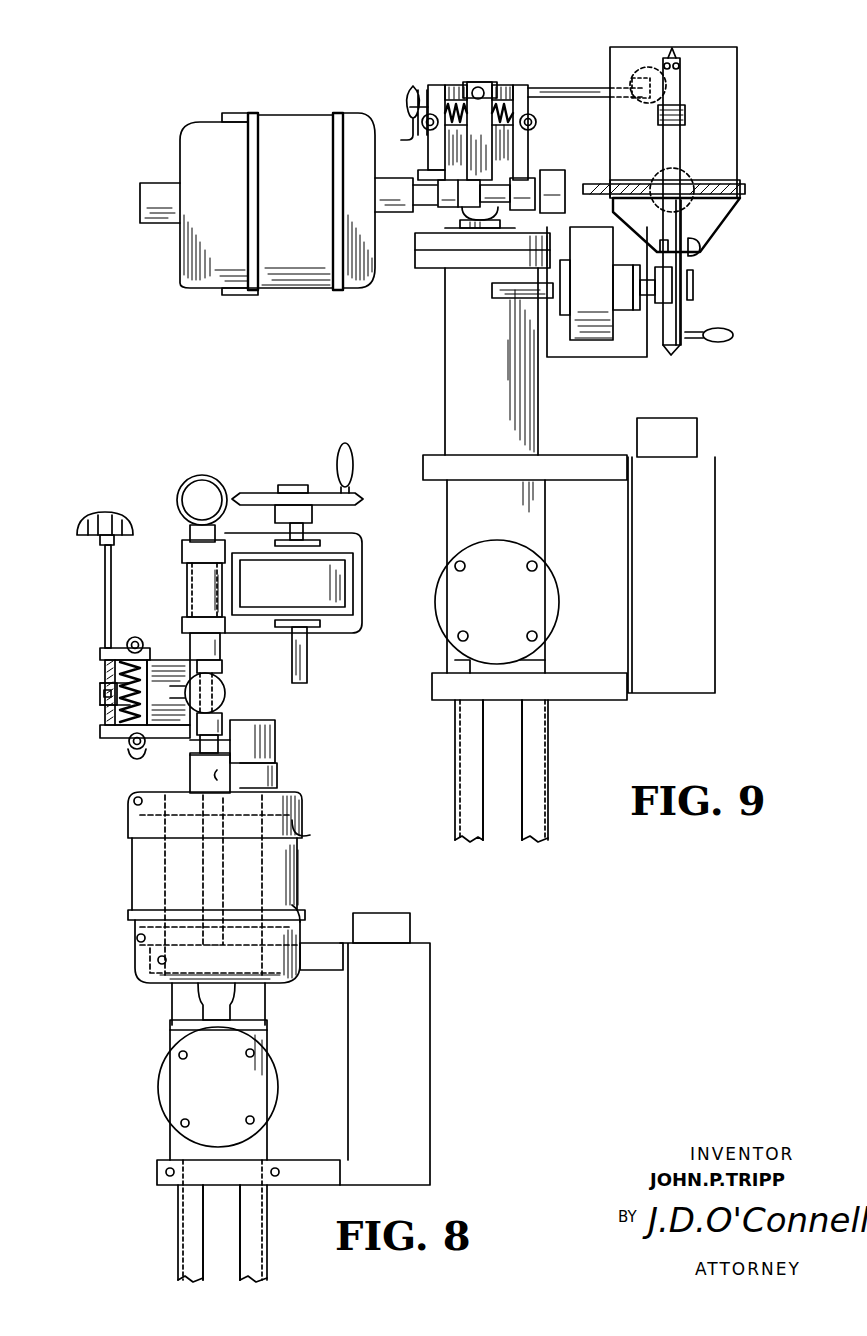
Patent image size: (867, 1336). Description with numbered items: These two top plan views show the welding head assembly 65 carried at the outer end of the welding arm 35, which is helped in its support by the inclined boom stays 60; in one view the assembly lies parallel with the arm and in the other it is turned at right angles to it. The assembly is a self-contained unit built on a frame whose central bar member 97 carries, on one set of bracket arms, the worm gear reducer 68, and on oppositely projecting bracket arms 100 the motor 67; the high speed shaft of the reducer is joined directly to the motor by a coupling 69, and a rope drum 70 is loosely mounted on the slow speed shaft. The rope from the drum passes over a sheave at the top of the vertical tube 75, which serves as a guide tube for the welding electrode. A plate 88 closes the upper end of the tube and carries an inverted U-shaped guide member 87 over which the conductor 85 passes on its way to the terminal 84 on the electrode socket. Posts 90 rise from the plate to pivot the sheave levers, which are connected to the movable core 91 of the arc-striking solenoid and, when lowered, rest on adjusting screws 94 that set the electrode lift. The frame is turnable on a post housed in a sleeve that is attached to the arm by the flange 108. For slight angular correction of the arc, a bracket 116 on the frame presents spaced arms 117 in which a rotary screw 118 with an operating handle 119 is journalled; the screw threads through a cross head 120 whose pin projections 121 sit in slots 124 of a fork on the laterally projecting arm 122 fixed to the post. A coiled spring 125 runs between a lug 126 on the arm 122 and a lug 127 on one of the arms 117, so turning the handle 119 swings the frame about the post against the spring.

In FIG. 9, the welding arm 35 is at (505, 748).
In FIG. 8, the welding arm 35 is at (220, 1244).
In FIG. 9, the inclined boom stays 60 is at (472, 780).
In FIG. 8, the inclined boom stays 60 is at (190, 1208).
In FIG. 9, the welding head assembly 65 is at (402, 272).
In FIG. 8, the welding head assembly 65 is at (316, 867).
In FIG. 9, the motor 67 is at (296, 130).
In FIG. 8, the motor 67 is at (140, 890).
In FIG. 9, the worm gear reducer 68 is at (598, 300).
In FIG. 8, the worm gear reducer 68 is at (298, 585).
In FIG. 9, the coupling 69 is at (455, 192).
In FIG. 8, the coupling 69 is at (226, 700).
In FIG. 9, the rope drum 70 is at (690, 320).
In FIG. 8, the rope drum 70 is at (252, 493).
In FIG. 8, the vertical tube 75 is at (198, 478).
In FIG. 9, the terminal 84 is at (700, 232).
In FIG. 9, the conductor 85 is at (602, 188).
In FIG. 9, the inverted U-shaped guide member 87 is at (720, 180).
In FIG. 9, the plate 88 is at (737, 125).
In FIG. 9, the posts 90 is at (664, 246).
In FIG. 9, the movable core 91 is at (690, 100).
In FIG. 9, the adjusting screws 94 is at (668, 58).
In FIG. 8, the central bar member 97 is at (230, 776).
In FIG. 8, the bracket arms 100 is at (145, 825).
In FIG. 9, the flange 108 is at (458, 238).
In FIG. 8, the flange 108 is at (255, 724).
In FIG. 9, the bracket 116 is at (502, 130).
In FIG. 8, the bracket 116 is at (172, 660).
In FIG. 9, the spaced arms 117 is at (436, 85).
In FIG. 8, the spaced arms 117 is at (101, 656).
In FIG. 9, the rotary screw 118 is at (500, 85).
In FIG. 8, the rotary screw 118 is at (105, 612).
In FIG. 9, the operating handle 119 is at (648, 66).
In FIG. 8, the operating handle 119 is at (104, 512).
In FIG. 9, the cross head 120 is at (476, 82).
In FIG. 8, the cross head 120 is at (100, 698).
In FIG. 9, the pin projections 121 is at (462, 90).
In FIG. 8, the pin projections 121 is at (100, 686).
In FIG. 9, the laterally projecting arm 122 is at (485, 145).
In FIG. 8, the laterally projecting arm 122 is at (160, 738).
In FIG. 9, the slots 124 is at (483, 90).
In FIG. 8, the slots 124 is at (100, 706).
In FIG. 9, the coiled spring 125 is at (529, 112).
In FIG. 8, the coiled spring 125 is at (130, 745).
In FIG. 8, the lug 126 is at (137, 637).
In FIG. 8, the lug 127 is at (134, 759).